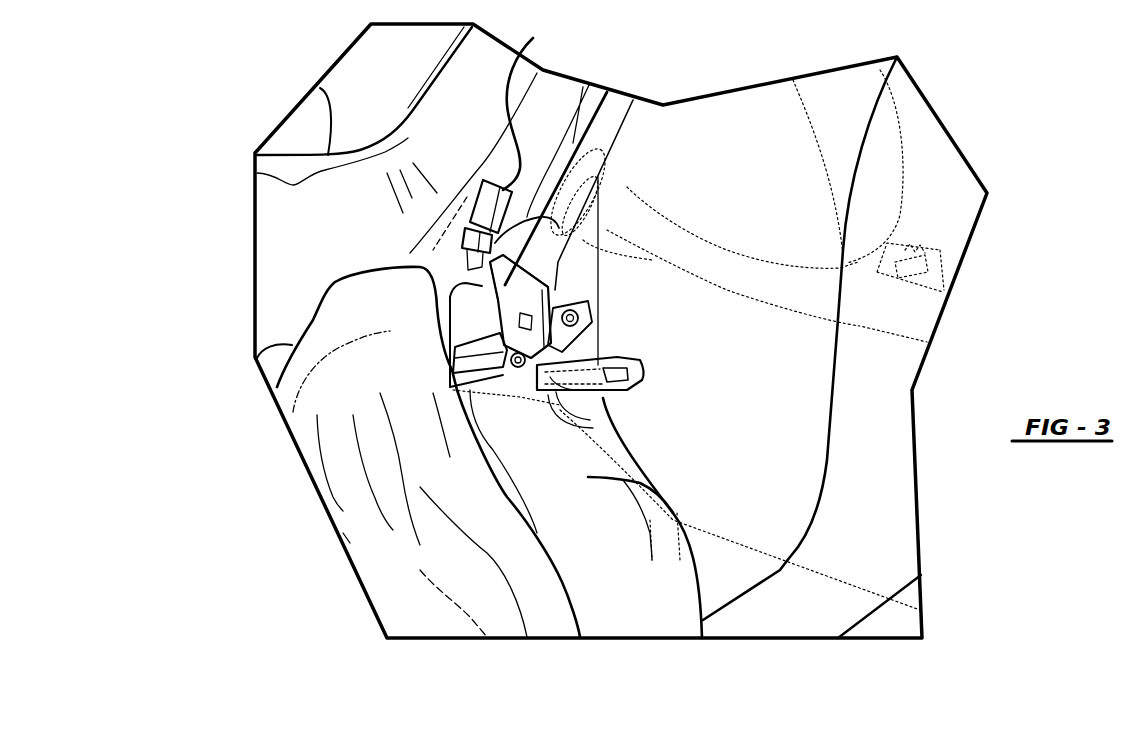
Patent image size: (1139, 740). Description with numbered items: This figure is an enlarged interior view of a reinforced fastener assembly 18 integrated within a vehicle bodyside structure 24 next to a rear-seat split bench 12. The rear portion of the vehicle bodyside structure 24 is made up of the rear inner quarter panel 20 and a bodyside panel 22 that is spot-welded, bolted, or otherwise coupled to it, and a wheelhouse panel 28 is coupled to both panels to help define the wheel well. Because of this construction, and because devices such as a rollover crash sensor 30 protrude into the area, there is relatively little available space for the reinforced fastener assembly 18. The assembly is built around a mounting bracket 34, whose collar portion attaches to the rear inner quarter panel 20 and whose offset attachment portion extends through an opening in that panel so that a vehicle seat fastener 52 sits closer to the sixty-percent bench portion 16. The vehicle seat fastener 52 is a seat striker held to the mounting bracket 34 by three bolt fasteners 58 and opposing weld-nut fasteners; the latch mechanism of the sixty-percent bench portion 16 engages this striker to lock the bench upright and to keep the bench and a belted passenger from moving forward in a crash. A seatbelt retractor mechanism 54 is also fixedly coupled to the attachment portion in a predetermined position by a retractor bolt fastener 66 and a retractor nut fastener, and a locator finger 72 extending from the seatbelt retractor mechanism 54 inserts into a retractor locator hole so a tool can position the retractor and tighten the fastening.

The rear-seat split bench 12 is at (815, 575).
The 60% bench portion 16 is at (907, 167).
The reinforced fastener assembly 18 is at (523, 381).
The rear inner quarter panel 20 is at (287, 262).
The bodyside panel 22 is at (320, 88).
The vehicle bodyside structure 24 is at (413, 112).
The wheelhouse panel 28 is at (260, 362).
The rollover crash sensor 30 is at (568, 155).
The mounting bracket 34 is at (474, 418).
The vehicle seat fastener 52 is at (643, 388).
The seatbelt retractor mechanism 54 is at (473, 293).
The bolt fasteners 58 is at (580, 303).
The retractor bolt fastener 66 is at (540, 383).
The locator finger 72 is at (430, 348).